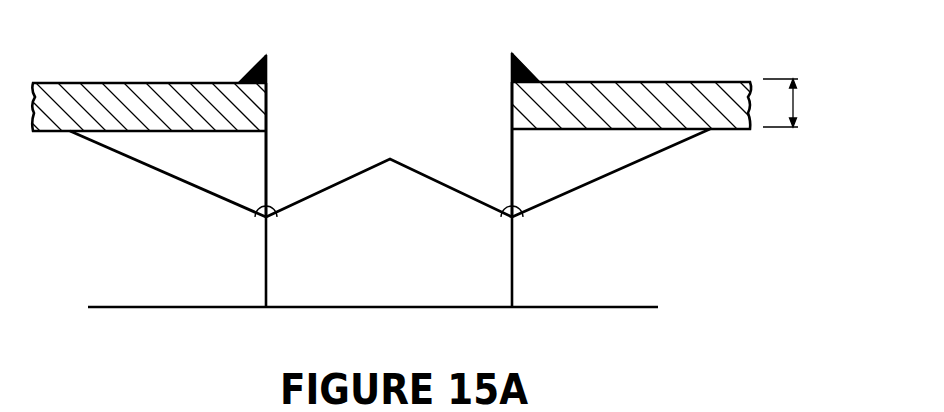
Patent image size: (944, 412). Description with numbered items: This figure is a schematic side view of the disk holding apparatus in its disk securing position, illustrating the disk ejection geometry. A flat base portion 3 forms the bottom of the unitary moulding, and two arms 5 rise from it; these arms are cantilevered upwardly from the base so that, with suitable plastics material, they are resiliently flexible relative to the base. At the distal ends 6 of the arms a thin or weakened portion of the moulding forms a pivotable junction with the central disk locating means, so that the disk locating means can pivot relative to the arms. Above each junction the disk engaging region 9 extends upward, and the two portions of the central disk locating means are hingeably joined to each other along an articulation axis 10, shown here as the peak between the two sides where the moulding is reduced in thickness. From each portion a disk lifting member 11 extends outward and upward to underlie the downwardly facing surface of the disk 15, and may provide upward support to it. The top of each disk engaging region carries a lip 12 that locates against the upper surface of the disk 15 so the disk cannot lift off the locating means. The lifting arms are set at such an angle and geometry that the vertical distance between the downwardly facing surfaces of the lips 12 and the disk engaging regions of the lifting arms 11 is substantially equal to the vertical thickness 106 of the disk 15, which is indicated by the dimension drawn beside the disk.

The base portion 3 is at (603, 307).
The arms 5 is at (266, 283).
The distal ends of the arms 6 is at (263, 220).
The disk engaging region 9 is at (267, 160).
The articulation axis 10 is at (393, 155).
The disk lifting member 11 is at (163, 173).
The lip 12 is at (252, 67).
The disk 15 is at (698, 86).
The vertical thickness 106 is at (800, 100).